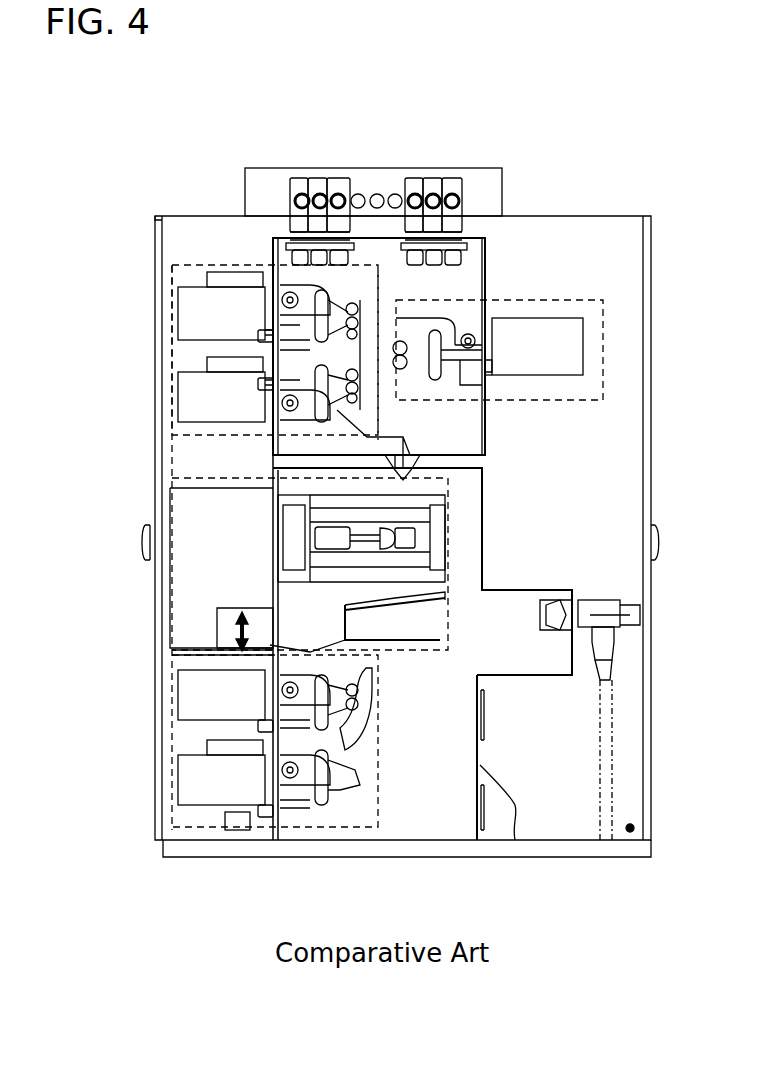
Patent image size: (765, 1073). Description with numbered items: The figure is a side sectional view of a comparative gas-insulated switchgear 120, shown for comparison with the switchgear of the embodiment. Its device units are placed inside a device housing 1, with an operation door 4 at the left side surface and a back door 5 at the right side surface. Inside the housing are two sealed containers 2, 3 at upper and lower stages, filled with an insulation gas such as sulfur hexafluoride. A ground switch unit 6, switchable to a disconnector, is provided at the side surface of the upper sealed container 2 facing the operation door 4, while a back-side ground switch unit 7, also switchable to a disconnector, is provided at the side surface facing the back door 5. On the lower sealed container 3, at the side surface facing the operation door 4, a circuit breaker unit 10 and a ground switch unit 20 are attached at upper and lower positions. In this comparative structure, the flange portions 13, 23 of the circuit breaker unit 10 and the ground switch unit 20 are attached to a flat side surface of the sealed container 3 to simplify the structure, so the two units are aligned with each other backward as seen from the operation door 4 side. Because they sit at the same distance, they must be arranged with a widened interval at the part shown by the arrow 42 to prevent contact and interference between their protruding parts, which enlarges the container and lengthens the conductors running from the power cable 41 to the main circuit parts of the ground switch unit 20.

The gas-insulated switchgear 120 is at (171, 124).
The device housing 1 is at (578, 216).
The sealed container 2 is at (486, 300).
The sealed container 3 is at (484, 768).
The operation door 4 is at (160, 252).
The back door 5 is at (648, 252).
The ground switch unit 6 is at (175, 345).
The back-side ground switch unit 7 is at (604, 383).
The circuit breaker unit 10 is at (186, 478).
The flange portion 13 is at (272, 523).
The ground switch unit 20 is at (178, 828).
The flange portion 23 is at (265, 770).
The power cable 41 is at (600, 640).
The arrow 42 is at (270, 640).